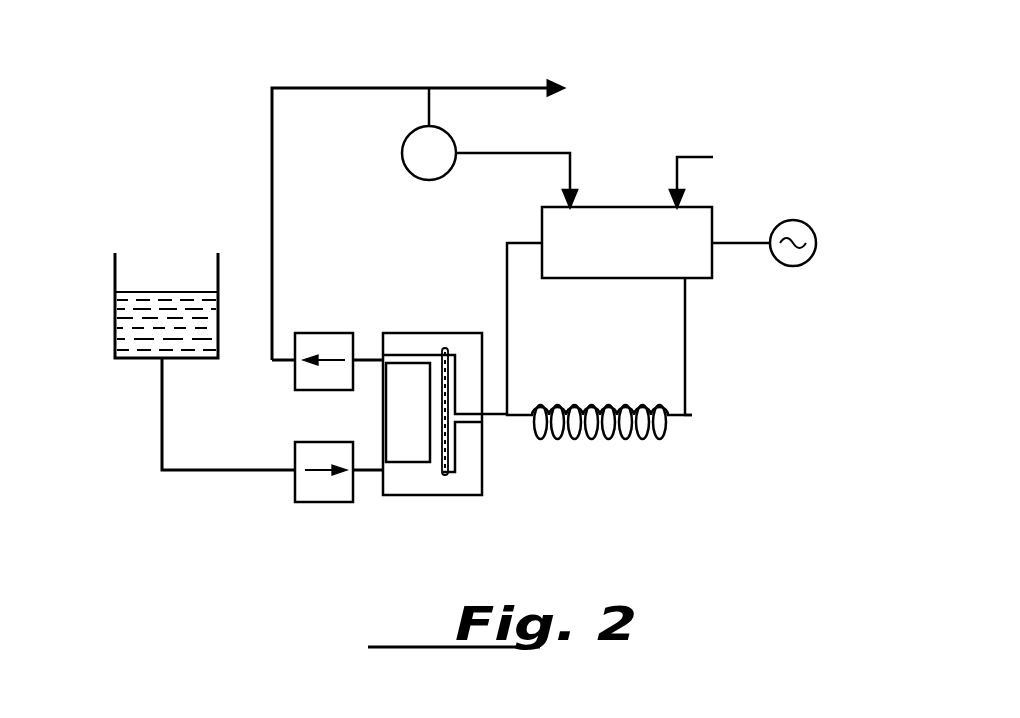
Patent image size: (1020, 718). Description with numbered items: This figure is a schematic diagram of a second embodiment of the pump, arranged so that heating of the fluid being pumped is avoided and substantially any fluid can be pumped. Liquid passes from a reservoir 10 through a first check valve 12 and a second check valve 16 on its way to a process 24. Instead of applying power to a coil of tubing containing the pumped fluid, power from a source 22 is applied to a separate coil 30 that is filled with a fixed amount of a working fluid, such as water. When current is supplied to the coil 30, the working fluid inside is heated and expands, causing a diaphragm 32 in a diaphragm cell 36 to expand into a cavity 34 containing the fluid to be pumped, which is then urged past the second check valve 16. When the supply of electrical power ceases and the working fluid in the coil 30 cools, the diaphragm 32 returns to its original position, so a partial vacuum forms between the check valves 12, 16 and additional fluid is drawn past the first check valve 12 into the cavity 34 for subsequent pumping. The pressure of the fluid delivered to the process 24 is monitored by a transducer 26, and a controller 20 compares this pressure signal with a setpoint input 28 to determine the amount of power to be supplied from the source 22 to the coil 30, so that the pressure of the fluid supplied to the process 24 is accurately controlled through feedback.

The reservoir 10 is at (113, 272).
The first check valve 12 is at (327, 487).
The second check valve 16 is at (322, 340).
The controller 20 is at (702, 270).
The source 22 is at (817, 237).
The process 24 is at (623, 70).
The transducer 26 is at (415, 152).
The setpoint input 28 is at (793, 133).
The coil 30 is at (643, 438).
The diaphragm 32 is at (450, 445).
The cavity 34 is at (441, 408).
The diaphragm cell 36 is at (412, 443).